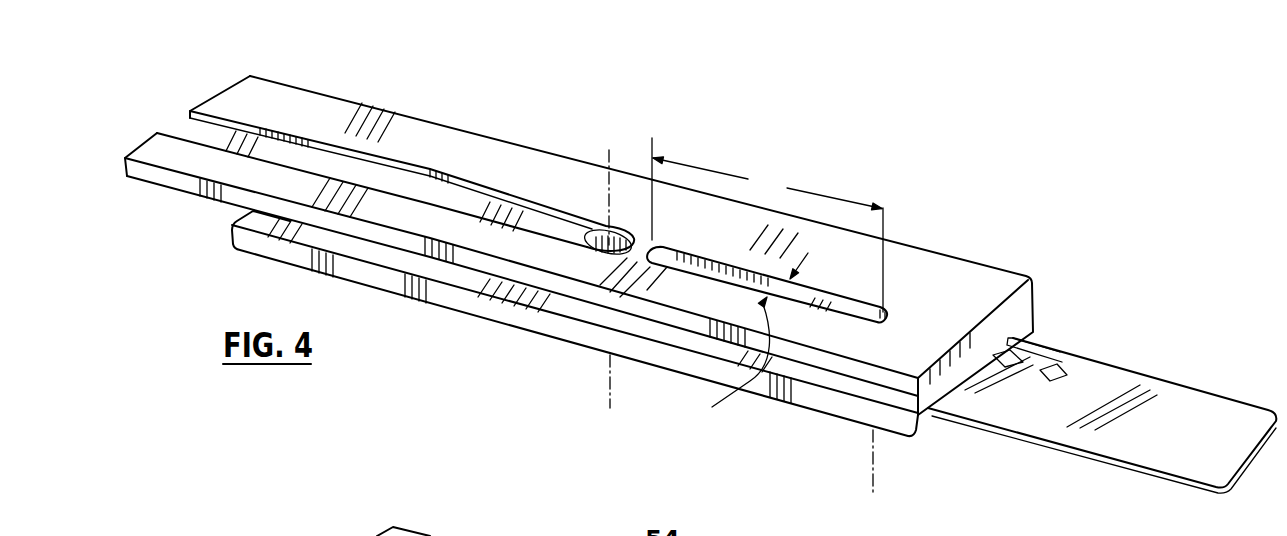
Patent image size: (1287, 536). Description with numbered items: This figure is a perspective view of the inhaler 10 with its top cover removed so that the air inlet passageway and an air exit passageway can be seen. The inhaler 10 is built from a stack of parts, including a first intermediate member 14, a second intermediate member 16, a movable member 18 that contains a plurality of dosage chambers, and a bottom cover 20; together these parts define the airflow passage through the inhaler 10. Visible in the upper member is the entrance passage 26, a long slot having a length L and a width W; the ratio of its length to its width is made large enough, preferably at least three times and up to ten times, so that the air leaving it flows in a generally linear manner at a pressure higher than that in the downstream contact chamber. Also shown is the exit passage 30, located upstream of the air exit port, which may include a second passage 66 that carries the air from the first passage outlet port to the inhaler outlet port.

The inhaler 10 is at (940, 134).
The first intermediate member 14 is at (957, 278).
The second intermediate member 16 is at (1027, 313).
The movable member 18 is at (1182, 412).
The bottom cover 20 is at (885, 422).
The entrance passage 26 is at (716, 275).
The exit passage 30 is at (452, 195).
The second passage 66 is at (523, 220).